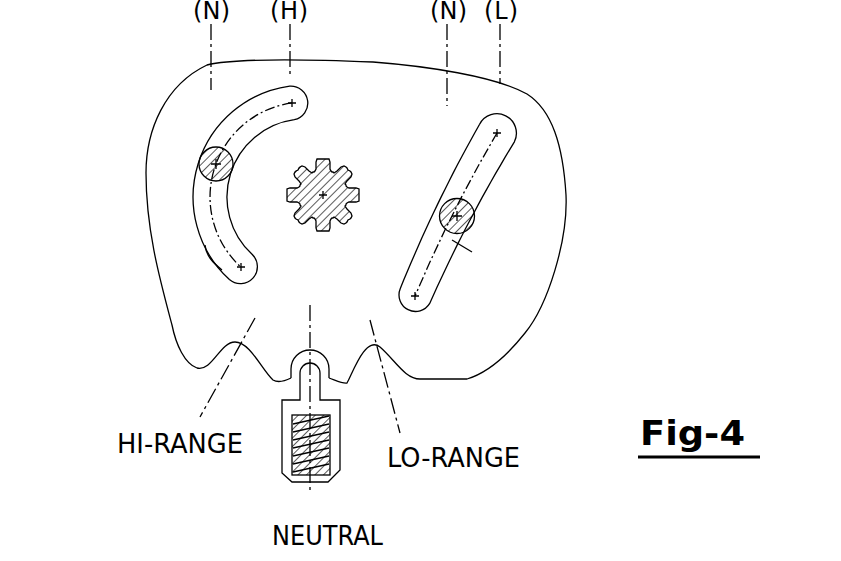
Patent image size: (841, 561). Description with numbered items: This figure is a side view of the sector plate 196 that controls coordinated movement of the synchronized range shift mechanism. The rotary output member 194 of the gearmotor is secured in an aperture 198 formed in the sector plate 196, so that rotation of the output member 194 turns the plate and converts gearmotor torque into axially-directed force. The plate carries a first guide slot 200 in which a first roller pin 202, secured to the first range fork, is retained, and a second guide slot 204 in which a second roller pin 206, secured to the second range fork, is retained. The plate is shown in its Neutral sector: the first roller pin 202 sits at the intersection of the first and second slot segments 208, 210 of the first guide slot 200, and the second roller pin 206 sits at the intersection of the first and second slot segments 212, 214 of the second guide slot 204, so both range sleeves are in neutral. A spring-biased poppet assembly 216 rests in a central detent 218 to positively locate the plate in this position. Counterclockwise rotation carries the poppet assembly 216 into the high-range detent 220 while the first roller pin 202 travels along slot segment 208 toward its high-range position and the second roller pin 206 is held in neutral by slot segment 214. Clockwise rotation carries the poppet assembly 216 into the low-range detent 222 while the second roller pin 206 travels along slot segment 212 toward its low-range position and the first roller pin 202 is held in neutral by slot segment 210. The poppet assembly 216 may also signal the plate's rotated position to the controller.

The rotary output member 194 is at (328, 226).
The sector plate 196 is at (546, 104).
The aperture 198 is at (358, 191).
The first guide slot 200 is at (212, 266).
The first roller pin 202 is at (204, 153).
The second guide slot 204 is at (474, 253).
The second roller pin 206 is at (476, 215).
The first slot segment 208 is at (252, 136).
The second slot segment 210 is at (234, 231).
The first slot segment 212 is at (503, 156).
The second slot segment 214 is at (453, 276).
The spring-biased poppet assembly 216 is at (298, 387).
The central detent 218 is at (333, 377).
The high-range detent 220 is at (222, 353).
The low-range detent 222 is at (401, 371).